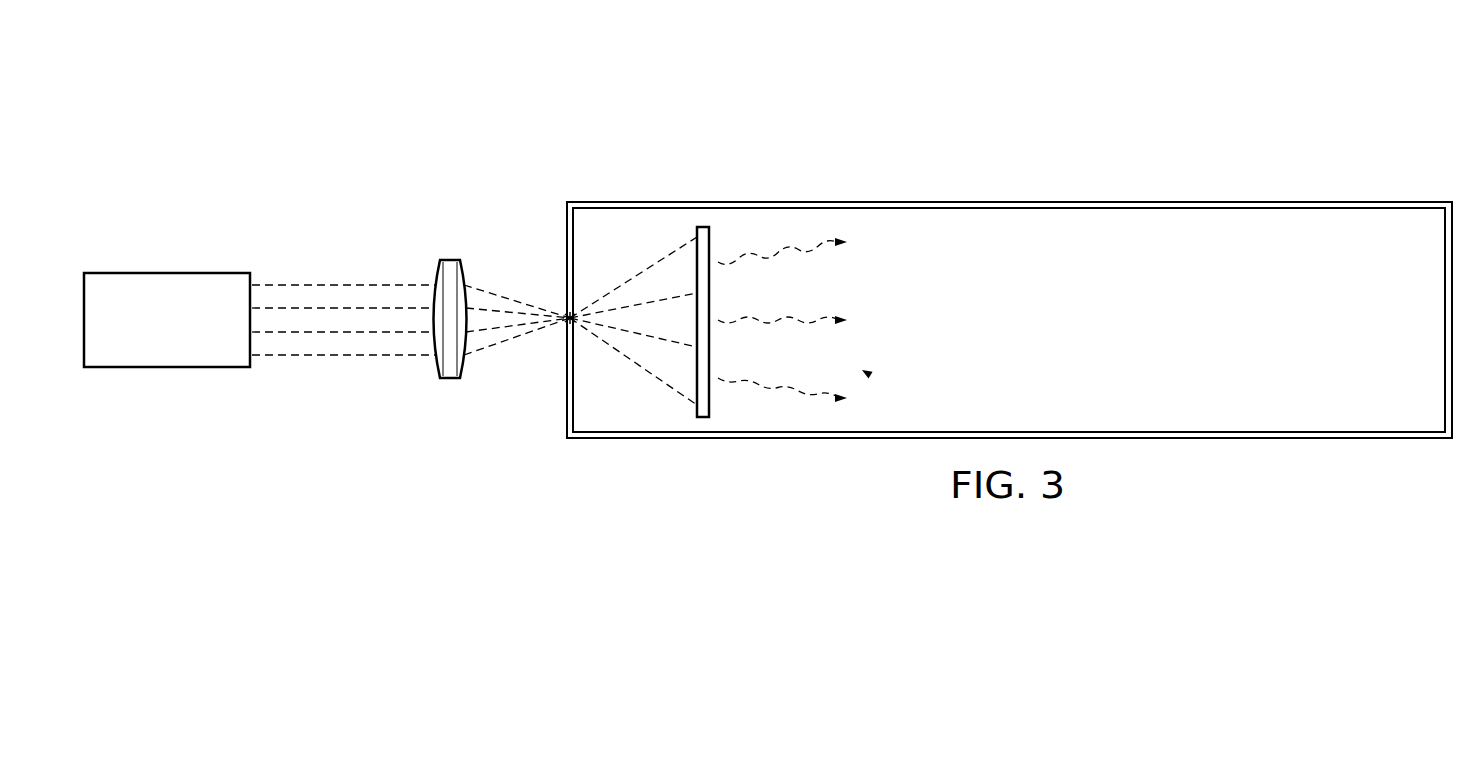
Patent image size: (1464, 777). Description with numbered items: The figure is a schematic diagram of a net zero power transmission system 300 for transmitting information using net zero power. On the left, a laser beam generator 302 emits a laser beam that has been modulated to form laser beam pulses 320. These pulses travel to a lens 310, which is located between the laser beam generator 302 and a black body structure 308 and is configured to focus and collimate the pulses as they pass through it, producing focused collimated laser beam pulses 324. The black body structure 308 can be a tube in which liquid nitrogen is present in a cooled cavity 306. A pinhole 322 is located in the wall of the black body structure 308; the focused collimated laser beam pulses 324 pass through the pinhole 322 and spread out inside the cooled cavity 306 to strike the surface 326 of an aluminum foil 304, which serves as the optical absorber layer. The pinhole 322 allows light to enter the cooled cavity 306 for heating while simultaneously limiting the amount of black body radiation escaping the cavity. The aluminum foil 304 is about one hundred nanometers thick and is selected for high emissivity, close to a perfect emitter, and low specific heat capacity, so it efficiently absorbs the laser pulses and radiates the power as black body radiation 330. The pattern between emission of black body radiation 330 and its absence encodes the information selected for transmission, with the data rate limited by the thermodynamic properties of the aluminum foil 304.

The net zero power transmission system 300 is at (402, 98).
The laser beam generator 302 is at (168, 272).
The laser beam pulses 320 is at (319, 262).
The lens 310 is at (447, 258).
The focused collimated laser beam pulses 324 is at (507, 300).
The pinhole 322 is at (567, 322).
The black body structure 308 is at (1095, 202).
The cooled cavity 306 is at (1223, 337).
The aluminum foil 304 is at (710, 302).
The surface 326 is at (697, 255).
The black body radiation 330 is at (870, 375).